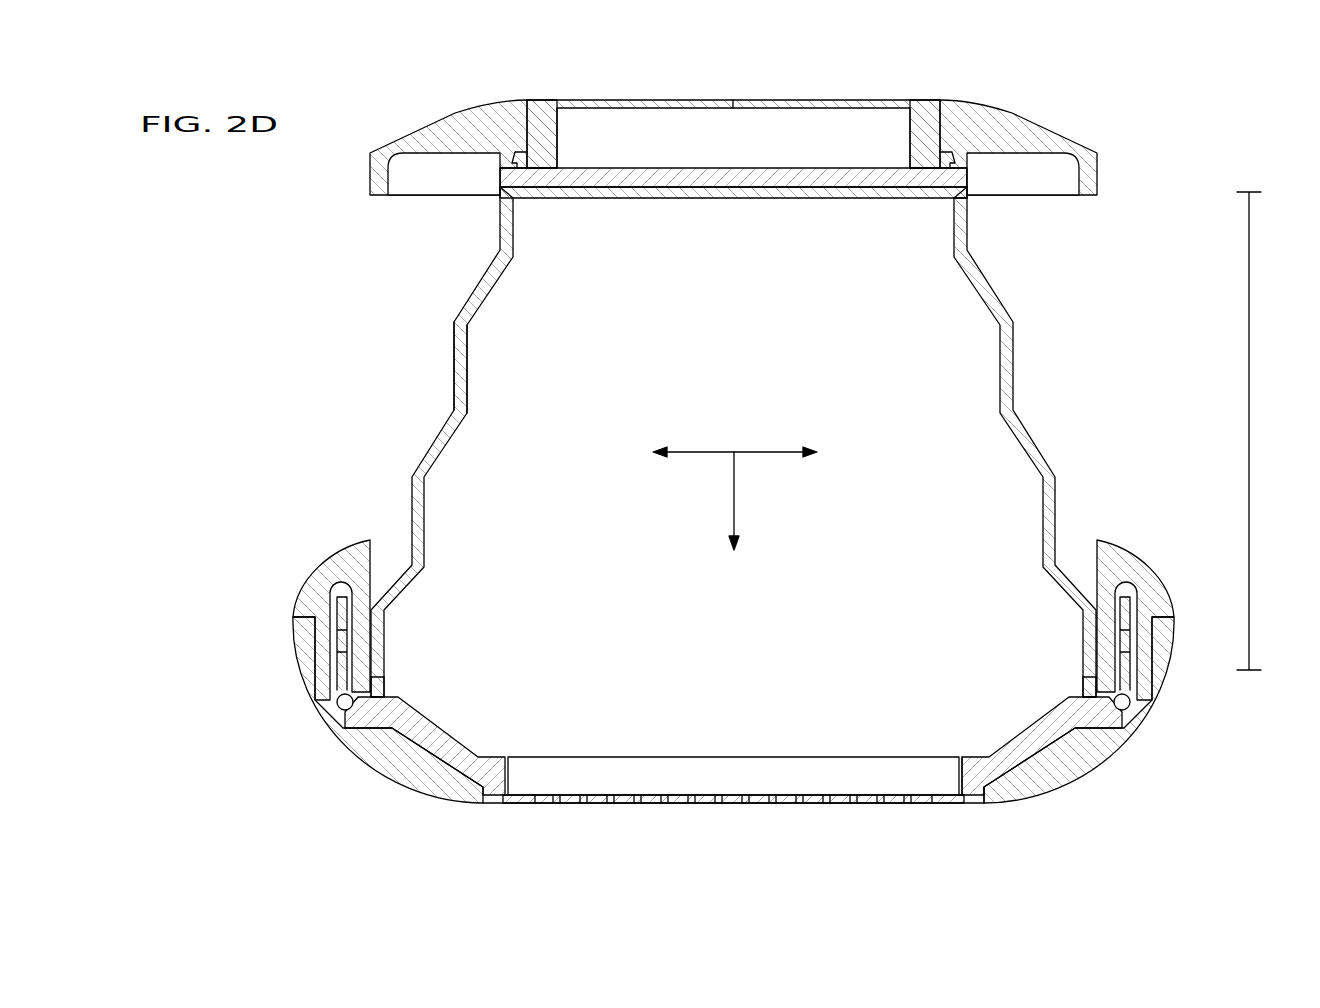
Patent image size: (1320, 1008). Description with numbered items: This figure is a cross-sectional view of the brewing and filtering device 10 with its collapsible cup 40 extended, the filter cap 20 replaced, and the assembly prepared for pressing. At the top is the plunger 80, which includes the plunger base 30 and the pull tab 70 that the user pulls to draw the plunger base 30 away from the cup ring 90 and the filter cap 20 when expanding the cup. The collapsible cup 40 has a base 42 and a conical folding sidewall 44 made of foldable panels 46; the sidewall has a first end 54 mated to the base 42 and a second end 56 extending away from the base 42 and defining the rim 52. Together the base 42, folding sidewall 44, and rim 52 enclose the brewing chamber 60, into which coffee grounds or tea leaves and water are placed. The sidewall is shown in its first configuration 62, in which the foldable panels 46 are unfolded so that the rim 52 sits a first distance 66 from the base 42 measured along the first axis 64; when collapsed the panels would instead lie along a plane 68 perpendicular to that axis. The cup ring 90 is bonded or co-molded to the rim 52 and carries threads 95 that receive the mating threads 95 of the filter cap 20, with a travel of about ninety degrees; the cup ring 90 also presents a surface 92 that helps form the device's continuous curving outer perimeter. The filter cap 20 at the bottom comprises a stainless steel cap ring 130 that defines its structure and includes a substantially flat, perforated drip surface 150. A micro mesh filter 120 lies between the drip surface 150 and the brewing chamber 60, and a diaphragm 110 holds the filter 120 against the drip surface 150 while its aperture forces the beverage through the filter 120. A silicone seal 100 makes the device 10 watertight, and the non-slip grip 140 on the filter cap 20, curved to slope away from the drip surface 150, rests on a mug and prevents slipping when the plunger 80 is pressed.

The brewing and filtering device 10 is at (1177, 138).
The filter cap 20 is at (318, 742).
The plunger base 30 is at (447, 123).
The collapsible cup 40 is at (478, 287).
The base 42 is at (676, 198).
The folding sidewall 44 is at (1056, 440).
The foldable panels 46 is at (455, 352).
The rim 52 is at (384, 665).
The first end 54 is at (951, 200).
The second end 56 is at (1083, 670).
The brewing chamber 60 is at (500, 461).
The first configuration 62 is at (286, 325).
The first axis 64 is at (735, 490).
The first distance 66 is at (1250, 430).
The plane 68 is at (772, 452).
The pull tab 70 is at (650, 100).
The plunger 80 is at (1025, 123).
The cup ring 90 is at (1165, 568).
The surface 92 is at (320, 568).
The threads 95 is at (340, 663).
The silicone seal 100 is at (1150, 696).
The diaphragm 110 is at (1045, 735).
The filter 120 is at (795, 803).
The cap ring 130 is at (965, 803).
The non-slip grip 140 is at (405, 790).
The drip surface 150 is at (615, 803).